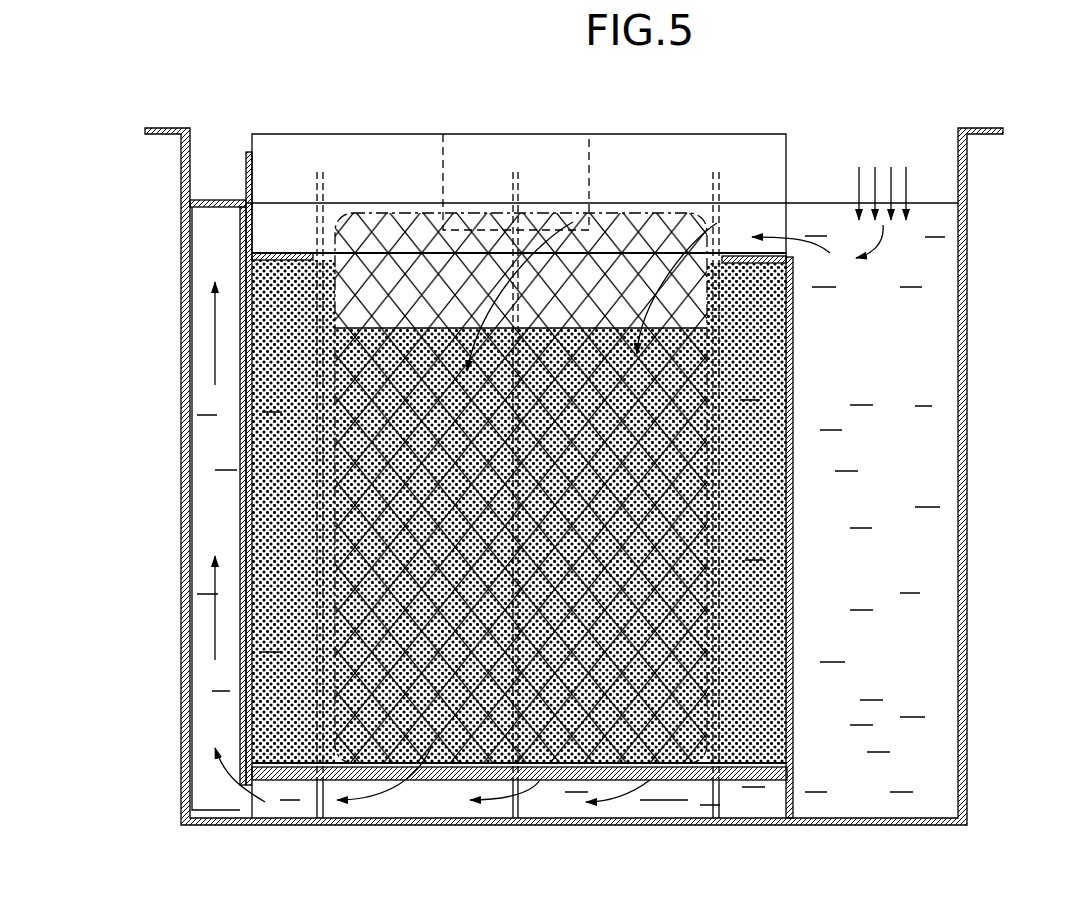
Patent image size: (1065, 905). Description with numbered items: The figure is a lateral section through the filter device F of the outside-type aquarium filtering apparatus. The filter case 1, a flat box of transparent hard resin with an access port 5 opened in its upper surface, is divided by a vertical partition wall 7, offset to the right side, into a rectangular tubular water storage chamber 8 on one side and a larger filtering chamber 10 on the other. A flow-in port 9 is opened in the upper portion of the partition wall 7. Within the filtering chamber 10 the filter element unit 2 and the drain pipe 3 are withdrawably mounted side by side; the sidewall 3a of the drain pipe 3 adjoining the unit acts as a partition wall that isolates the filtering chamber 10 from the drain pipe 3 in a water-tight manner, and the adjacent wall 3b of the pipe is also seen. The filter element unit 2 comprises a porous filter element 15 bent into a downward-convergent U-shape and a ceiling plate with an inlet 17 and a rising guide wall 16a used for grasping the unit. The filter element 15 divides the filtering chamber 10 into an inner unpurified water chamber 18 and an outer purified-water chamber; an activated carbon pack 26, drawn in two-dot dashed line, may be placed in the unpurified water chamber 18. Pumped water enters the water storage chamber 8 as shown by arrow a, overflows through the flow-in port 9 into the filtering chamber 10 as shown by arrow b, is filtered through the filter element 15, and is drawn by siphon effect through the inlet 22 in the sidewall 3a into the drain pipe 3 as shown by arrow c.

The filter case 1 is at (967, 432).
The filter element unit 2 is at (560, 786).
The drain pipe 3 is at (181, 541).
The sidewall 3a is at (256, 233).
The channel wall member 3b is at (207, 198).
The access port 5 is at (617, 210).
The partition wall 7 is at (793, 452).
The water storage chamber 8 is at (882, 588).
The flow-in port 9 is at (790, 186).
The filtering chamber 10 is at (470, 210).
The filter element 15 is at (758, 438).
The guide wall 16a is at (553, 143).
The inlet 17 is at (291, 253).
The unpurified water chamber 18 is at (313, 368).
The inlet 22 is at (258, 812).
The activated carbon pack 26 is at (640, 212).
The arrow a is at (907, 195).
The arrow b is at (778, 237).
The arrow c is at (662, 266).
The filter device F is at (970, 378).